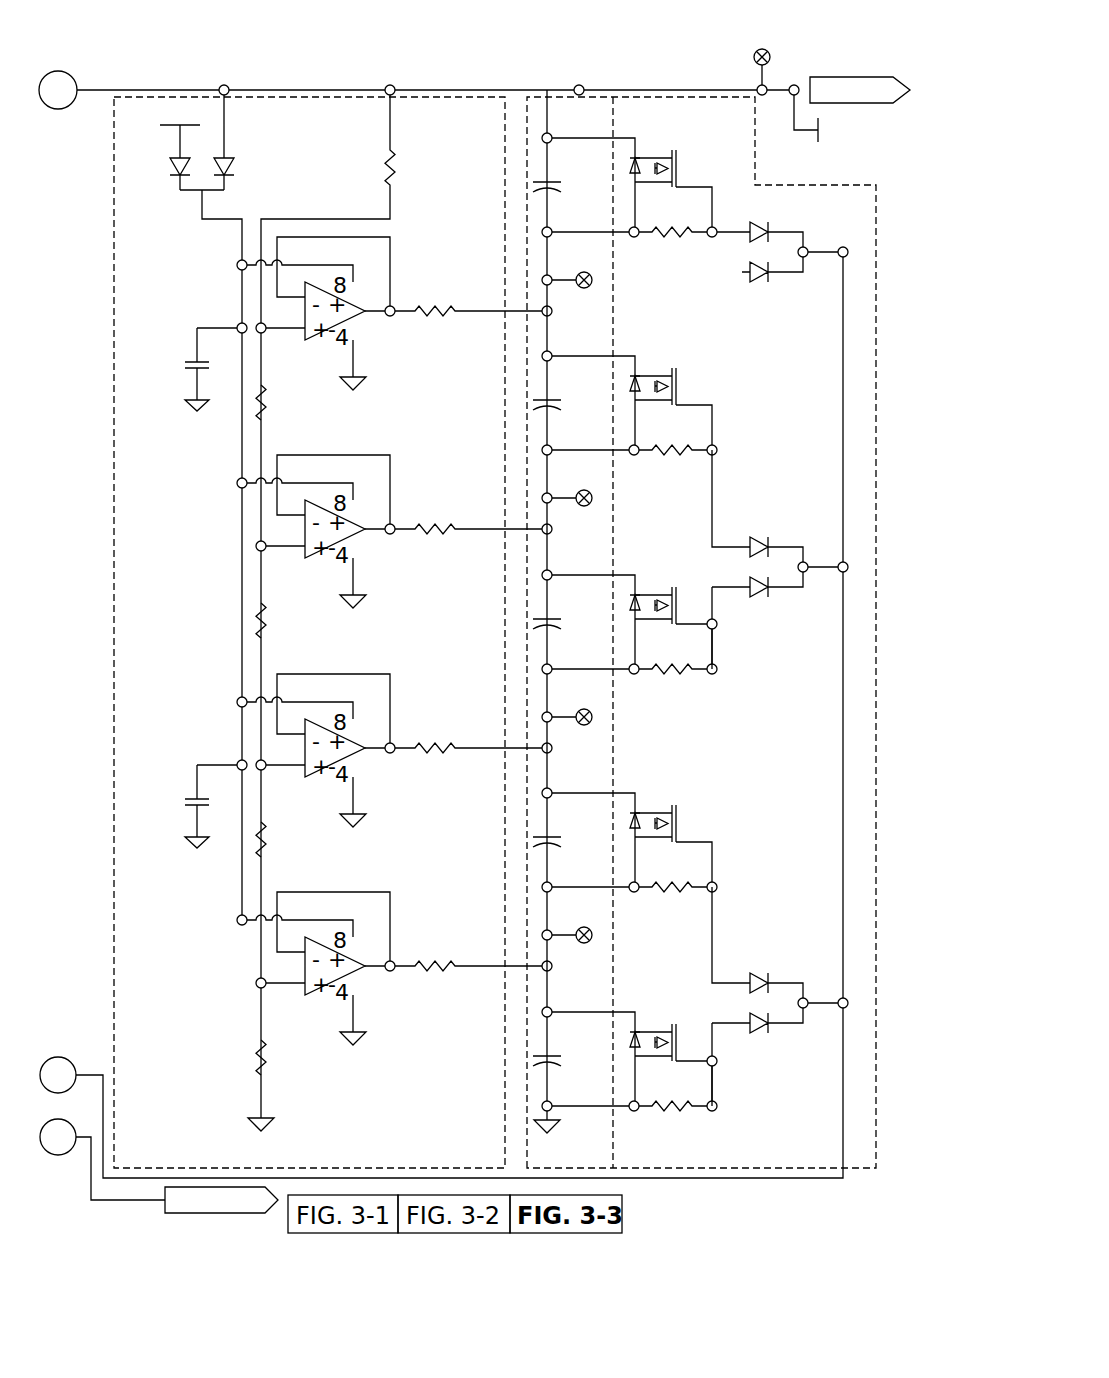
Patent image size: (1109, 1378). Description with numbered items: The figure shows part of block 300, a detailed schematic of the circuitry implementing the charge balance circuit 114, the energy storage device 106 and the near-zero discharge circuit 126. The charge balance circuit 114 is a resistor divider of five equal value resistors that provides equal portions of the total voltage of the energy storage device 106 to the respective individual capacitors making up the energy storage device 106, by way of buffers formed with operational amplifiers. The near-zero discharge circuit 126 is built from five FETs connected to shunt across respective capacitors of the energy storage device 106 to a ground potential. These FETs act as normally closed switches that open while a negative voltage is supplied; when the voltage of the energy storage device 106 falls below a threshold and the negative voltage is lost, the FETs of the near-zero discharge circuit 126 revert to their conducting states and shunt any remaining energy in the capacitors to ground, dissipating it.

The block 300 is at (198, 53).
The charge balance circuit 114 is at (298, 97).
The energy storage device 106 is at (535, 97).
The near-zero discharge circuit 126 is at (632, 97).